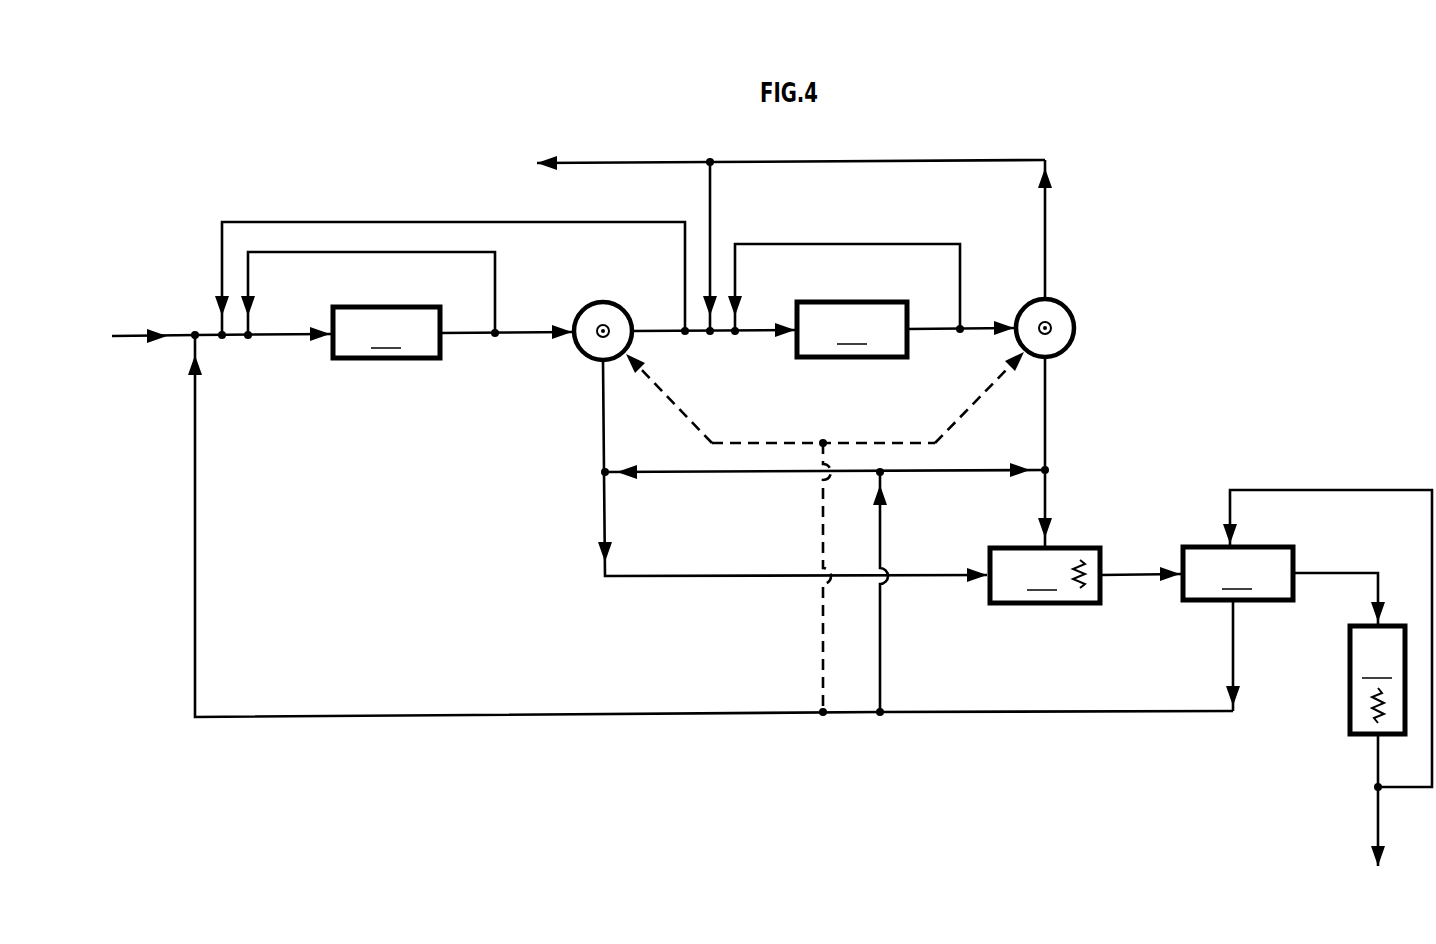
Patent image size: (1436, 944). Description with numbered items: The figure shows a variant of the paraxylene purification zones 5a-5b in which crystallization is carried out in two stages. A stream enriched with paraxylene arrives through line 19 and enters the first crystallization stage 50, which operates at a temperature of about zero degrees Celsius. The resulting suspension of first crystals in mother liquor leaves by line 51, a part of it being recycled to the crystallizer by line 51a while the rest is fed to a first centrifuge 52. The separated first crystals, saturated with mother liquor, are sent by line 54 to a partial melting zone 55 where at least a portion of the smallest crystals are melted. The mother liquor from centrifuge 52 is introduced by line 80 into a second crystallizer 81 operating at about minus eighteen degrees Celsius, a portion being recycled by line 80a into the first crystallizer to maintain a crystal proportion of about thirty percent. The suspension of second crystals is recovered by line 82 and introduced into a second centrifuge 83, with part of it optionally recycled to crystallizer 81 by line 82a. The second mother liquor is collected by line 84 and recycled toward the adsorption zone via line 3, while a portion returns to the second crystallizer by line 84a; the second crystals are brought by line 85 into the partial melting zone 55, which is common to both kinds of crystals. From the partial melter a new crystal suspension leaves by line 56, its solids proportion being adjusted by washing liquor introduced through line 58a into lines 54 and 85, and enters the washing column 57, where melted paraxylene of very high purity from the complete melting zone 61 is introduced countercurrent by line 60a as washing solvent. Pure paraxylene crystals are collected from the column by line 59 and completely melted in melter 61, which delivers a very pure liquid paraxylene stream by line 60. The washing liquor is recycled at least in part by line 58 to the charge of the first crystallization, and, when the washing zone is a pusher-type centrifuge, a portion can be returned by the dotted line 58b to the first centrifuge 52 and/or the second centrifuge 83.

The line 3 is at (647, 162).
The line 19 is at (133, 336).
The first crystallization stage 50 is at (317, 332).
The line 51 is at (512, 336).
The line 51a is at (492, 262).
The centrifuge 52 is at (600, 300).
The line 54 is at (605, 440).
The partial melting zone 55 is at (1045, 575).
The line 56 is at (1128, 577).
The washing column 57 is at (1238, 629).
The line 58 is at (1090, 710).
The line 58a is at (880, 640).
The line 58b is at (823, 497).
The line 59 is at (1343, 574).
The line 60 is at (1378, 778).
The line 60a is at (1343, 489).
The melter 61 is at (1377, 680).
The line 80 is at (650, 340).
The line 80a is at (683, 258).
The second crystallizer 81 is at (852, 329).
The line 82 is at (930, 334).
The line 82a is at (812, 243).
The second centrifuge 83 is at (1074, 308).
The line 84 is at (1048, 227).
The line 84a is at (713, 195).
The line 85 is at (1047, 433).
The crystallization unit 5a-5b is at (1222, 241).